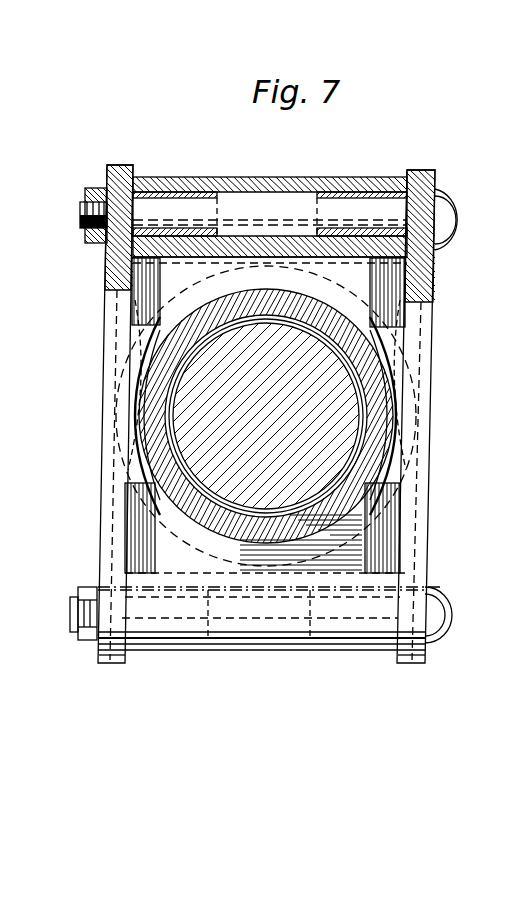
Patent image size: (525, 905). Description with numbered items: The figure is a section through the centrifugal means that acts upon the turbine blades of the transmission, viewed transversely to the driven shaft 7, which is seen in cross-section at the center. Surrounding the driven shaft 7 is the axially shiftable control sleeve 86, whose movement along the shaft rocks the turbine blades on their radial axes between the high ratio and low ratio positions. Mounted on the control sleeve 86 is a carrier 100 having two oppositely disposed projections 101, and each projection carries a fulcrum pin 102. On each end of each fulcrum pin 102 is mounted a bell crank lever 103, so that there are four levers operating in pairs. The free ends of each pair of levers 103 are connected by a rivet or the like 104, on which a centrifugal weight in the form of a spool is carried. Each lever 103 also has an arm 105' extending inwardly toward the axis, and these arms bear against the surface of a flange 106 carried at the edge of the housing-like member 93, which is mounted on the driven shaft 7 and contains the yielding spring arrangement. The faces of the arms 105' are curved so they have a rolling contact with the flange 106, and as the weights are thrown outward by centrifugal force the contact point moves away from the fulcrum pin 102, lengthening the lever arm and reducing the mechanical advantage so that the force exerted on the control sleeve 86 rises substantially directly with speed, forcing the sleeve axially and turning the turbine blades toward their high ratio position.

The driven shaft 7 is at (338, 387).
The control sleeve 86 is at (360, 470).
The housing 93 is at (157, 307).
The carrier 100 is at (270, 190).
The projections 101 is at (195, 190).
The fulcrum pins 102 is at (82, 205).
The bell crank lever 103 is at (122, 165).
The rivet 104 is at (440, 605).
The arm 105' is at (280, 413).
The flange 106 is at (390, 286).